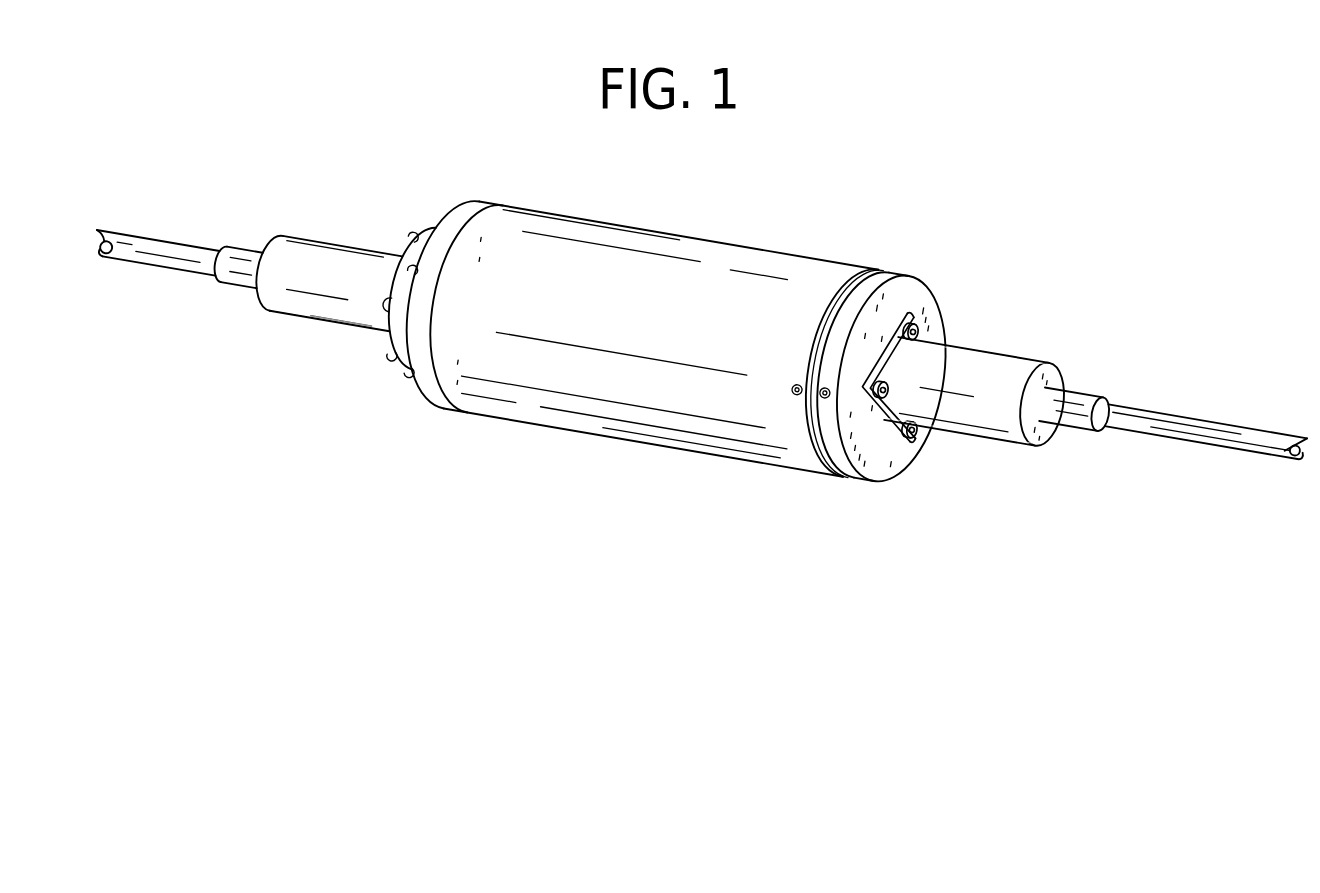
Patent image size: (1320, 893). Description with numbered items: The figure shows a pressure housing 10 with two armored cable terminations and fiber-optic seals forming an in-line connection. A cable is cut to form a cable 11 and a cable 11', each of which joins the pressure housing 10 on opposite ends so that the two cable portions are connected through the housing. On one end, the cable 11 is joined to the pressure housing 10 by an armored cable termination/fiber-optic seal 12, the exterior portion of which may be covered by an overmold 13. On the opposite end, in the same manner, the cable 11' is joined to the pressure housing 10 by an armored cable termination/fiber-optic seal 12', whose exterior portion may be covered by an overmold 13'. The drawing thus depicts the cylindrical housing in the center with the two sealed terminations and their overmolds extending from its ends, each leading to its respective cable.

The pressure housing 10 is at (890, 514).
The cable 11 is at (1206, 447).
The cable 11' is at (156, 229).
The armored cable termination/fiber-optic seal 12 is at (1001, 430).
The armored cable termination/fiber-optic seal 12' is at (304, 313).
The overmold 13 is at (977, 376).
The overmold 13' is at (326, 256).